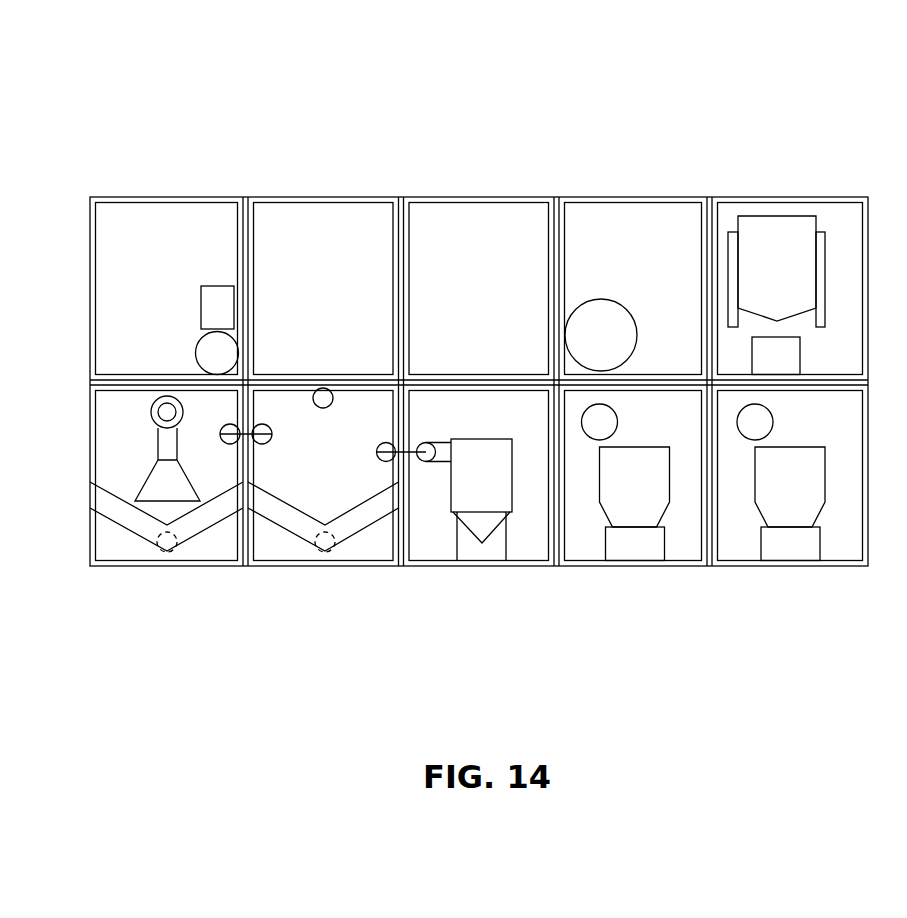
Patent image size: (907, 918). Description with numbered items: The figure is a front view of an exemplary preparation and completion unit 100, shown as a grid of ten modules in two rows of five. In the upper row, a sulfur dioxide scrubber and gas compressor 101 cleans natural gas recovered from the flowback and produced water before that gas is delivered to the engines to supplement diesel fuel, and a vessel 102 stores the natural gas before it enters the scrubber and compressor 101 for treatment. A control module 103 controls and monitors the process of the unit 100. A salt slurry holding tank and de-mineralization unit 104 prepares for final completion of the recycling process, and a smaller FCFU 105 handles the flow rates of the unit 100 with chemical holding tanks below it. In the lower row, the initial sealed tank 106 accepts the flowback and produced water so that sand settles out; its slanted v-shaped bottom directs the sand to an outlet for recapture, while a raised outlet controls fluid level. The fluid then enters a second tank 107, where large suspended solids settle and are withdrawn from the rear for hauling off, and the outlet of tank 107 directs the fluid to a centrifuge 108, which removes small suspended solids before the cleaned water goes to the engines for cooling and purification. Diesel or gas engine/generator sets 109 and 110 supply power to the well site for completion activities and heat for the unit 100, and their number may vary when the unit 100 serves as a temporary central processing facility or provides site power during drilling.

The preparation and completion unit 100 is at (253, 127).
The sulfur dioxide scrubber and gas compressor 101 is at (218, 228).
The vessel 102 is at (375, 228).
The control module 103 is at (531, 228).
The salt slurry holding tank and de-mineralization unit 104 is at (688, 228).
The smaller FCFU 105 is at (839, 228).
The initial sealed tank 106 is at (218, 542).
The second tank 107 is at (377, 542).
The centrifuge 108 is at (533, 538).
The diesel or gas engine/generator set 109 is at (690, 537).
The diesel or gas engine/generator set 110 is at (842, 537).